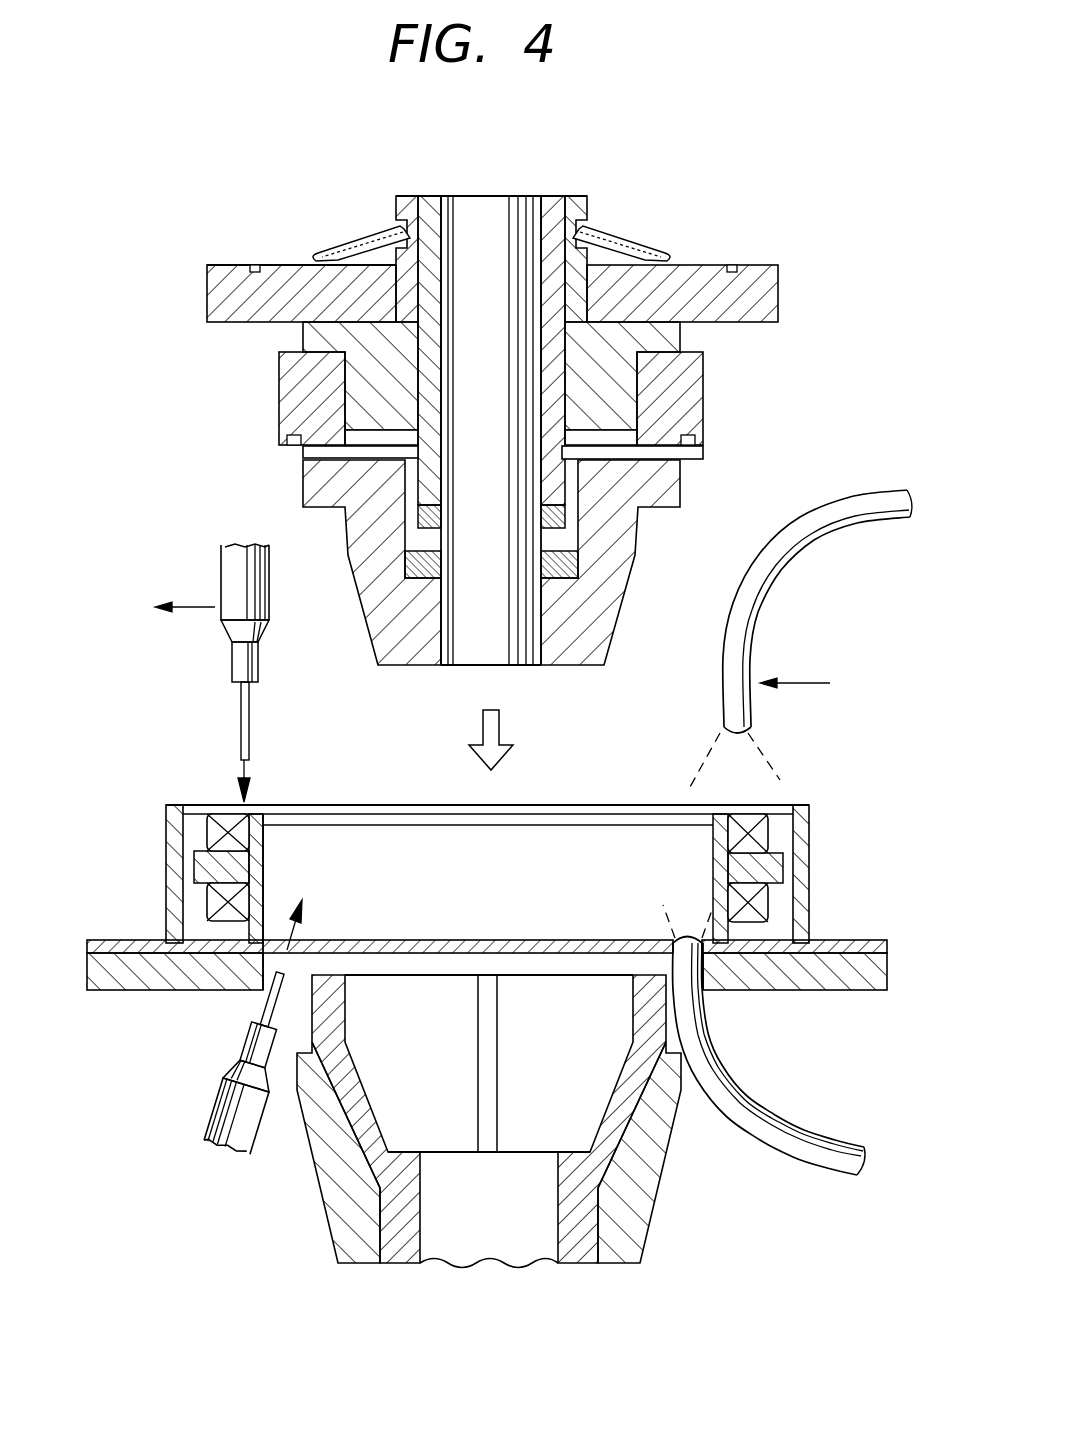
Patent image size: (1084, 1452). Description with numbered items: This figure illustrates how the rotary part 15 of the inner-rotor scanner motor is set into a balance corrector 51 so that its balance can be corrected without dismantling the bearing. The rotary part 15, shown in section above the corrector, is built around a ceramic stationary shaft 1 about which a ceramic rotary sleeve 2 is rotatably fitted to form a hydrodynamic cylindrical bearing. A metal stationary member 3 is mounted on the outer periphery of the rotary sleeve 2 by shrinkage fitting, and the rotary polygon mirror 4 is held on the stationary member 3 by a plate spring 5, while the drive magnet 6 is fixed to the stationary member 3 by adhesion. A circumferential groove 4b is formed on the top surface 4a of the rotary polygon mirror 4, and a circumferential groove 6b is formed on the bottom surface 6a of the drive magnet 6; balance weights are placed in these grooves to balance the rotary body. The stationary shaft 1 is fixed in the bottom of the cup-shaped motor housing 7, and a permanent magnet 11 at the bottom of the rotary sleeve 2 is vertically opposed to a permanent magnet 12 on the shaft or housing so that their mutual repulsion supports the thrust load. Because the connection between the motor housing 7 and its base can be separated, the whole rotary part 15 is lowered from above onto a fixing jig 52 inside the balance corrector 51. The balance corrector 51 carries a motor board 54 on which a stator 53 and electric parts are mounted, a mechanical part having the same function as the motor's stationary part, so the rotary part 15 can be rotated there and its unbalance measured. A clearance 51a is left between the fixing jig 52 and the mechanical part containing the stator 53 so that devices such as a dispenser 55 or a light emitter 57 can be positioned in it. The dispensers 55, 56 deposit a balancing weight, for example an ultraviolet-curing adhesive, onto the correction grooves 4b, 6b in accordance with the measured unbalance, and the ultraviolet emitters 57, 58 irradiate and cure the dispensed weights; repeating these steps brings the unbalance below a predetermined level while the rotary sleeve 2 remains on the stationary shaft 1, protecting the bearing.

The stationary shaft 1 is at (475, 215).
The rotary sleeve 2 is at (547, 200).
The stationary member 3 is at (575, 210).
The rotary polygon mirror 4 is at (222, 273).
The top surface of the rotary polygon mirror 4a is at (296, 266).
The circumferential groove 4b is at (256, 266).
The plate spring 5 is at (600, 242).
The drive magnet 6 is at (286, 382).
The bottom surface of the drive magnet 6a is at (318, 456).
The circumferential groove 6b is at (286, 443).
The motor housing 7 is at (597, 635).
The permanent magnet 11 is at (568, 566).
The permanent magnet 12 is at (562, 520).
The rotary part 15 is at (700, 247).
The balance corrector 51 is at (148, 853).
The clearance 51a is at (302, 1012).
The fixing jig 52 is at (577, 1118).
The stator 53 is at (772, 832).
The motor board 54 is at (826, 946).
The dispenser 55 is at (235, 1112).
The dispenser 56 is at (235, 567).
The ultraviolet emitter 57 is at (812, 1160).
The ultraviolet emitter 58 is at (845, 505).